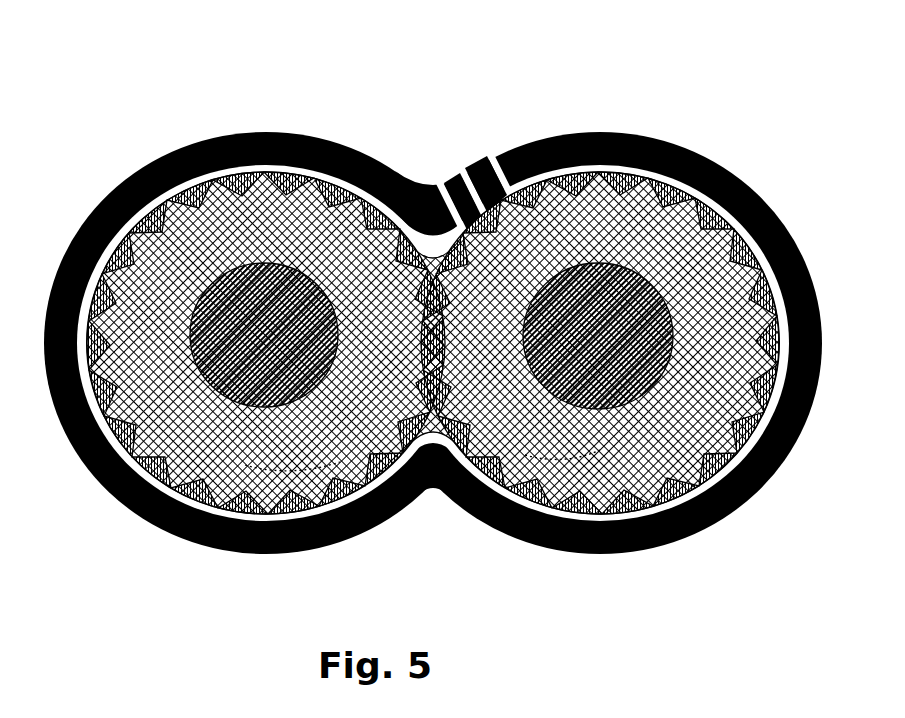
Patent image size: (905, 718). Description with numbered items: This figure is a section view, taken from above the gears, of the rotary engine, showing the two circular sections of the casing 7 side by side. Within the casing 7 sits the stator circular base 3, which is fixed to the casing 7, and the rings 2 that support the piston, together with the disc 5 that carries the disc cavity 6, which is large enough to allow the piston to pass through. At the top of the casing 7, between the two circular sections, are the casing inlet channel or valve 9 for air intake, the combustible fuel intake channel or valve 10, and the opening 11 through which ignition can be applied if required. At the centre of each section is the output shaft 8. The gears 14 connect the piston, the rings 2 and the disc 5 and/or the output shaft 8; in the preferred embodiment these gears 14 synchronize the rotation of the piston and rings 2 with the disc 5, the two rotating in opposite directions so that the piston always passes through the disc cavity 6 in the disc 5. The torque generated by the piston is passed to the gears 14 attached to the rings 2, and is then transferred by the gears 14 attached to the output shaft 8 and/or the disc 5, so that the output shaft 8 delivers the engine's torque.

The rings supporting piston 2 is at (665, 195).
The stator circular base 3 is at (635, 312).
The disc 5 is at (352, 190).
The disc cavity 6 is at (272, 172).
The casing 7 is at (178, 160).
The output shaft 8 is at (233, 290).
The casing inlet channel/valve for air intake 9 is at (445, 186).
The combustible fuel intake channel/valve 10 is at (467, 174).
The opening to apply ignition 11 is at (495, 150).
The gears 14 is at (503, 420).